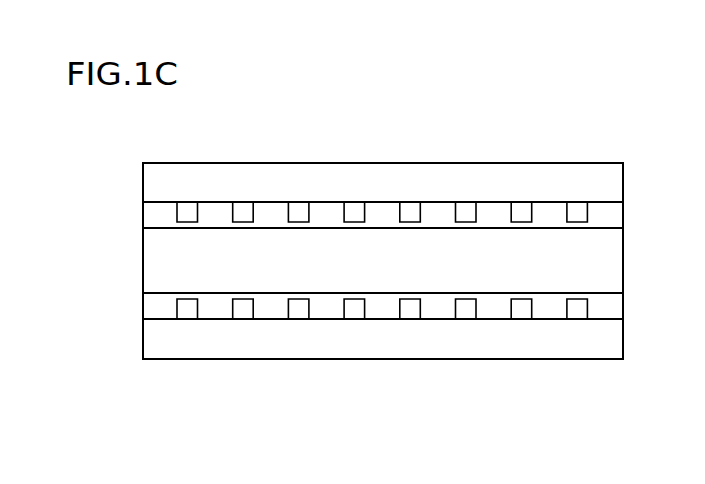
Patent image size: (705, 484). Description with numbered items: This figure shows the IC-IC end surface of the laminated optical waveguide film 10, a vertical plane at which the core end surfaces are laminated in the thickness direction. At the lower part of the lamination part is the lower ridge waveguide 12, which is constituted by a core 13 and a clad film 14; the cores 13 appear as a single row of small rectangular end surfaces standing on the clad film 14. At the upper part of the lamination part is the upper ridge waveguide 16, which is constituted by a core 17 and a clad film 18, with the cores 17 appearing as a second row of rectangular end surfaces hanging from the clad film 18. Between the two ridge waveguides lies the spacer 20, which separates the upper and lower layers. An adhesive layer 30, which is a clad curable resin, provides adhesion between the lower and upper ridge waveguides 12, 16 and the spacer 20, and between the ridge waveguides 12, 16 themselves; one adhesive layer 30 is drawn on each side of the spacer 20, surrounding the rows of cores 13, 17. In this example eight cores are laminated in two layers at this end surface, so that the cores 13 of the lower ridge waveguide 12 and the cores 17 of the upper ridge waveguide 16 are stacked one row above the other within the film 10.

The laminated optical waveguide film 10 is at (329, 146).
The lower ridge waveguide 12 is at (641, 295).
The core 13 is at (578, 312).
The clad film 14 is at (503, 343).
The upper ridge waveguide 16 is at (641, 164).
The core 17 is at (578, 212).
The clad film 18 is at (512, 180).
The spacer 20 is at (153, 262).
The adhesive layer 30 is at (153, 215).